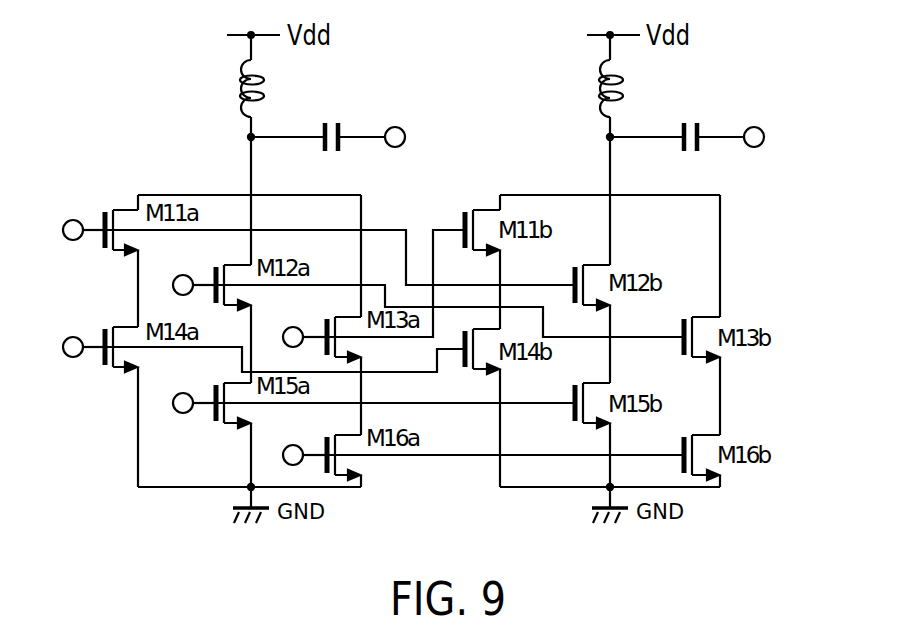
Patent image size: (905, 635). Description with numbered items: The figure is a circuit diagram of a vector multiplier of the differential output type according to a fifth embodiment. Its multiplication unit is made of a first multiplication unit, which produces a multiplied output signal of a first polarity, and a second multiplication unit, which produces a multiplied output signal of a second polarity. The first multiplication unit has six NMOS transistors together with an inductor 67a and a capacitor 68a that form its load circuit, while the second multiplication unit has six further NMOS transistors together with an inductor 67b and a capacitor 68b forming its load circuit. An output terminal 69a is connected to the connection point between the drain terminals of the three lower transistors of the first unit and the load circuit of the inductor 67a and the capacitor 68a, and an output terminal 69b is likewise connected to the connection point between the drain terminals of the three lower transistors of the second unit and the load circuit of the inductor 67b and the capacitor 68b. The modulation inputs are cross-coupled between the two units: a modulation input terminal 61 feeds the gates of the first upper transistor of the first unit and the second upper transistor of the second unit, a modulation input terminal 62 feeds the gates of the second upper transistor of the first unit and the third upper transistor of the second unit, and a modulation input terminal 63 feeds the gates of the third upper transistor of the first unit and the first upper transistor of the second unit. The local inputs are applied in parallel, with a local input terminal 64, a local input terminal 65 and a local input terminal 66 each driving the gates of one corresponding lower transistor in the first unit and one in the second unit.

The modulation input terminal 61 is at (74, 241).
The modulation input terminal 62 is at (189, 275).
The modulation input terminal 63 is at (298, 327).
The local input terminal 64 is at (74, 358).
The local input terminal 65 is at (189, 393).
The local input terminal 66 is at (298, 445).
The inductor 67a is at (265, 88).
The inductor 67b is at (624, 88).
The capacitor 68a is at (341, 122).
The capacitor 68b is at (700, 122).
The output terminal 69a is at (405, 137).
The output terminal 69b is at (764, 137).